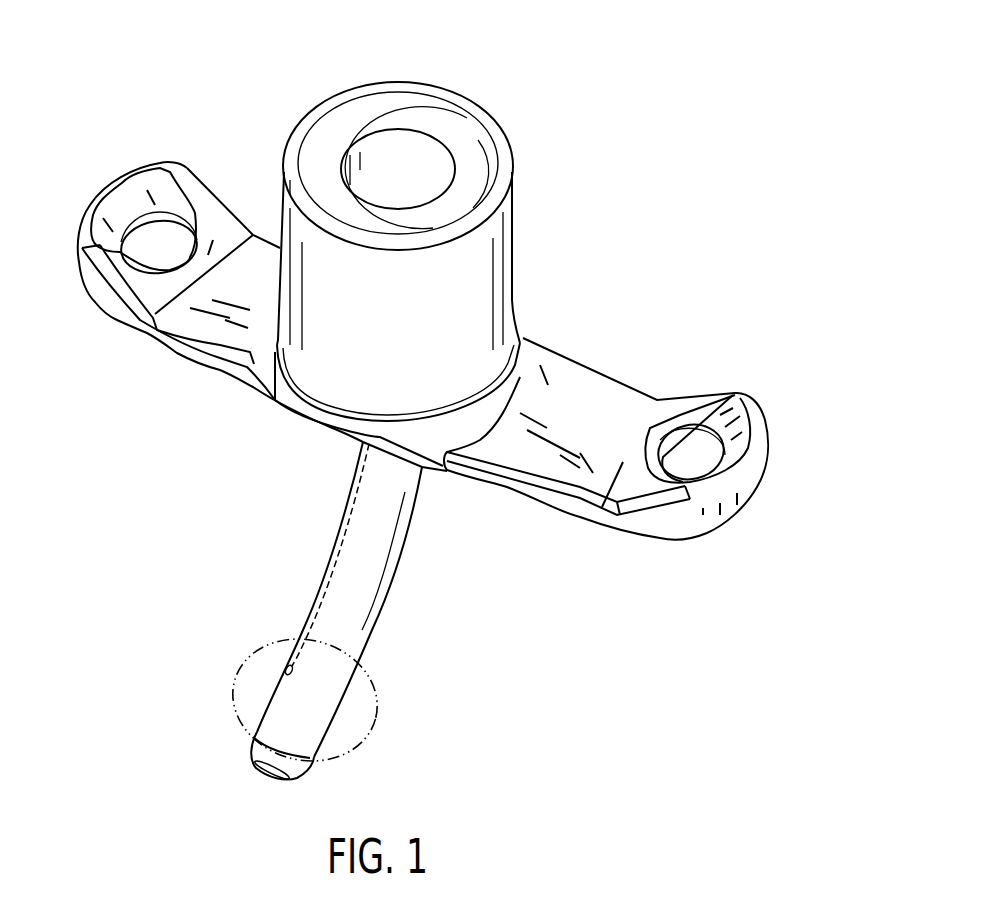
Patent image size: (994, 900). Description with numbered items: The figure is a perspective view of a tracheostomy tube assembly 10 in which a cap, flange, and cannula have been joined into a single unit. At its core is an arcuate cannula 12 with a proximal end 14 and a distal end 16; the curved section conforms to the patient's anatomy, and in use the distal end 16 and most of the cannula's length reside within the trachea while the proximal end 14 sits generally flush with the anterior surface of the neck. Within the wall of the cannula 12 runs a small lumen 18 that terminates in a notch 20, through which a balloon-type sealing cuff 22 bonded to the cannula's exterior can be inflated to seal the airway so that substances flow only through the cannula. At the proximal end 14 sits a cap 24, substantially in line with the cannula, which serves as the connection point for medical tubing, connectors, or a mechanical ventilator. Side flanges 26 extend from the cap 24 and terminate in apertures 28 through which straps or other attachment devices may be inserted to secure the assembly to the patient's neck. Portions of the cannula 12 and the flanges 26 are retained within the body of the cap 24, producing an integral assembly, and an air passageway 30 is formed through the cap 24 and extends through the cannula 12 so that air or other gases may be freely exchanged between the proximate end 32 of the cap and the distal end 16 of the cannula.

The tracheostomy tube assembly 10 is at (588, 44).
The cannula 12 is at (400, 568).
The proximal end 14 is at (340, 441).
The distal end 16 is at (236, 764).
The lumen 18 is at (340, 538).
The notch 20 is at (286, 668).
The cuff 22 is at (367, 743).
The cap 24 is at (483, 277).
The side flanges 26 is at (268, 262).
The apertures 28 is at (164, 235).
The air passageway 30 is at (394, 175).
The proximate end 32 is at (494, 106).